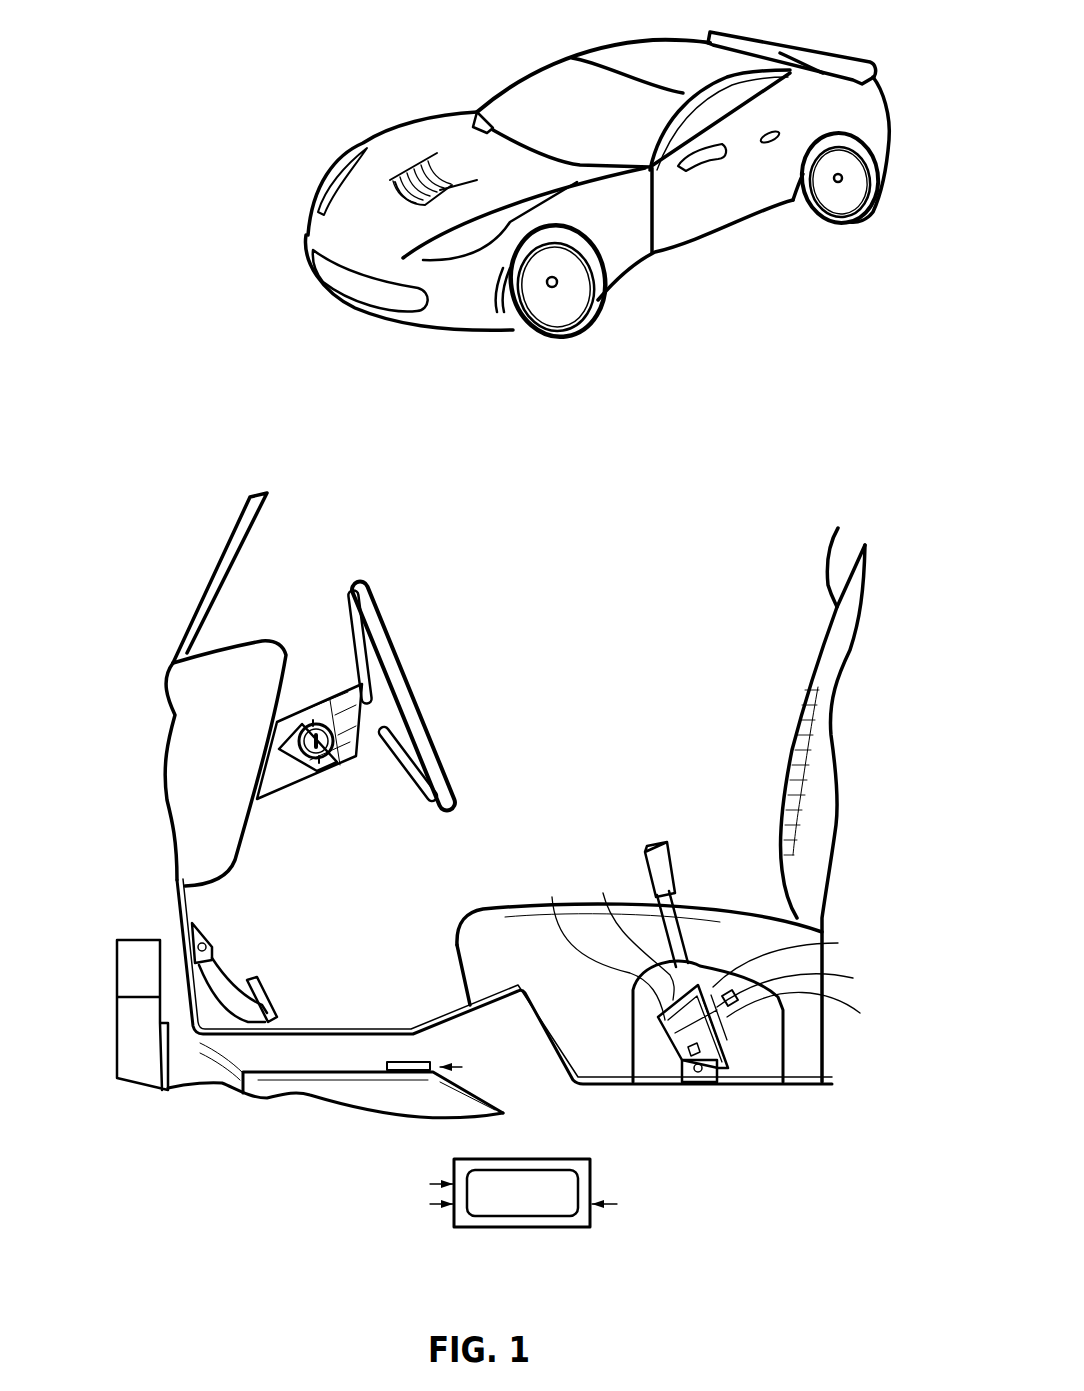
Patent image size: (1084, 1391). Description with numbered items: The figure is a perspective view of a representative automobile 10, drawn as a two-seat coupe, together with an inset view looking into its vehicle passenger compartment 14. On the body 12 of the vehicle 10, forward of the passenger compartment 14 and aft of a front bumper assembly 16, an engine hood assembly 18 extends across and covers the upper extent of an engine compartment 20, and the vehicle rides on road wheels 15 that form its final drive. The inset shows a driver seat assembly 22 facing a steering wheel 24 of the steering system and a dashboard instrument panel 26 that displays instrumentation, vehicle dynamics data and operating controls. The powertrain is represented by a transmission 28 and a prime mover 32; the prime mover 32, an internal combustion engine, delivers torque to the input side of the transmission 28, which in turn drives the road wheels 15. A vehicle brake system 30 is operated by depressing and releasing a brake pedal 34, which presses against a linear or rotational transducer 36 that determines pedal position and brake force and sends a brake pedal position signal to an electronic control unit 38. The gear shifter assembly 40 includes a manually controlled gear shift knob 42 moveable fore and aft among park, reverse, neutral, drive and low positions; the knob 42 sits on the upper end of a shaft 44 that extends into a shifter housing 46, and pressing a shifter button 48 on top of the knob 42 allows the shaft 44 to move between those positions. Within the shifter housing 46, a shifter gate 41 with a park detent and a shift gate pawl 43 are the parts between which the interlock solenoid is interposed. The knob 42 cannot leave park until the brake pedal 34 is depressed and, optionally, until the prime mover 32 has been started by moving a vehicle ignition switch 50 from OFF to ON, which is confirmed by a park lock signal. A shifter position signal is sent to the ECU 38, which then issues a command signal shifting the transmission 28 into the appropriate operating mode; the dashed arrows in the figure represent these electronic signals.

The automobile 10 is at (172, 88).
The body 12 is at (792, 234).
The vehicle passenger compartment 14 is at (598, 45).
The road wheels 15 is at (558, 337).
The front bumper assembly 16 is at (306, 258).
The engine hood assembly 18 is at (376, 150).
The engine compartment 20 is at (402, 120).
The driver seat assembly 22 is at (800, 736).
The steering wheel 24 is at (391, 646).
The dashboard instrument panel 26 is at (259, 643).
The transmission 28 is at (348, 1070).
The vehicle brake system 30 is at (290, 896).
The prime mover 32 is at (150, 940).
The brake pedal 34 is at (266, 1003).
The transducer 36 is at (204, 997).
The electronic control unit 38 is at (490, 1228).
The gear shifter assembly 40 is at (632, 798).
The shifter gate 41 is at (658, 1020).
The gear shift knob 42 is at (654, 882).
The shift gate pawl 43 is at (676, 1037).
The shaft 44 is at (694, 940).
The shifter housing 46 is at (784, 1067).
The shifter button 48 is at (652, 842).
The vehicle ignition switch 50 is at (313, 732).